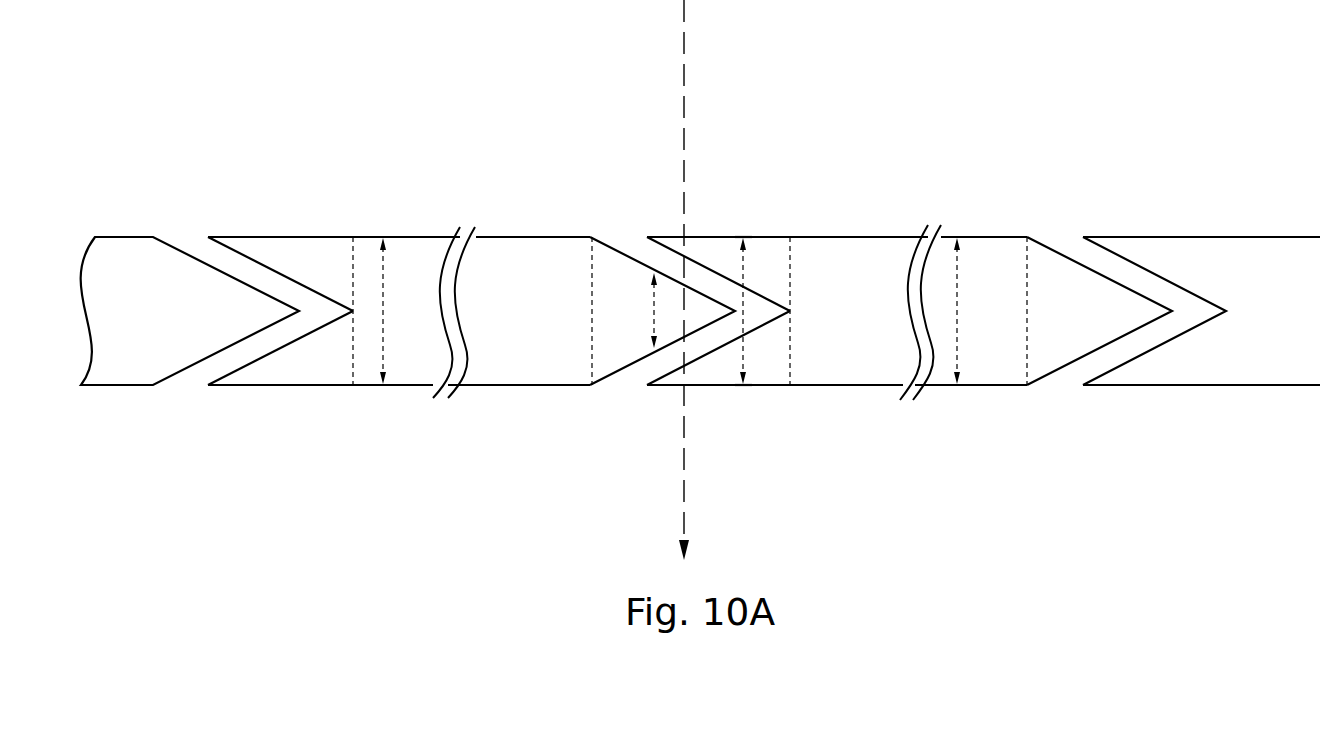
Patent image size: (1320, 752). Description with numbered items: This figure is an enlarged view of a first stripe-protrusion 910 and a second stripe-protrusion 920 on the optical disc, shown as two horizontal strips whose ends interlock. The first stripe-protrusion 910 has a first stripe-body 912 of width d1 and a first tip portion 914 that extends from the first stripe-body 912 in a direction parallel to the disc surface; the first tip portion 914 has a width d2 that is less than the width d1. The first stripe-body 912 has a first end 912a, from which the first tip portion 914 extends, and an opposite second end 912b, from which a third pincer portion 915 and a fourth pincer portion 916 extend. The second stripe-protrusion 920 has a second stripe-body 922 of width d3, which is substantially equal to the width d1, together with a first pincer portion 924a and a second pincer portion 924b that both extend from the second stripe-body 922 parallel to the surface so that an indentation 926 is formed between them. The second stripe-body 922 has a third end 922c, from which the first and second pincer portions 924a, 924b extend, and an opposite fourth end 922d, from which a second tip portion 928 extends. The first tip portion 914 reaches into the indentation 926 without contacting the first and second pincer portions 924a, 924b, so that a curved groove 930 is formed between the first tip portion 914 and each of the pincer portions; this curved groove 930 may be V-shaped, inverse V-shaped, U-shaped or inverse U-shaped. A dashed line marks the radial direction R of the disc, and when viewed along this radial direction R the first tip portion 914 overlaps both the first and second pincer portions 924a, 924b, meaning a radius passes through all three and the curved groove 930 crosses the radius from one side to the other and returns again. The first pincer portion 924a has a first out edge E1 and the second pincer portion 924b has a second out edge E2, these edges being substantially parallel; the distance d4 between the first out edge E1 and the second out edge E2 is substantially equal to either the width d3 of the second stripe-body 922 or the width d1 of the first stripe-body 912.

The first stripe-protrusion 910 is at (429, 224).
The first stripe-body 912 is at (482, 370).
The first end 912a is at (580, 247).
The second end 912b is at (367, 247).
The first tip portion 914 is at (605, 358).
The third pincer portion 915 is at (258, 372).
The fourth pincer portion 916 is at (267, 250).
The second stripe-protrusion 920 is at (898, 228).
The second stripe-body 922 is at (835, 370).
The third end 922c is at (803, 247).
The fourth end 922d is at (1000, 247).
The first pincer portion 924a is at (695, 365).
The second pincer portion 924b is at (715, 255).
The indentation 926 is at (708, 343).
The second tip portion 928 is at (1045, 370).
The curved groove 930 is at (672, 267).
The first out edge E1 is at (743, 388).
The second out edge E2 is at (743, 237).
The width of the first stripe-body d1 is at (396, 311).
The width of the first tip portion d2 is at (629, 310).
The width of the second stripe-body d3 is at (971, 311).
The distance between the first out edge and the second out edge d4 is at (756, 311).
The radial direction R is at (693, 280).